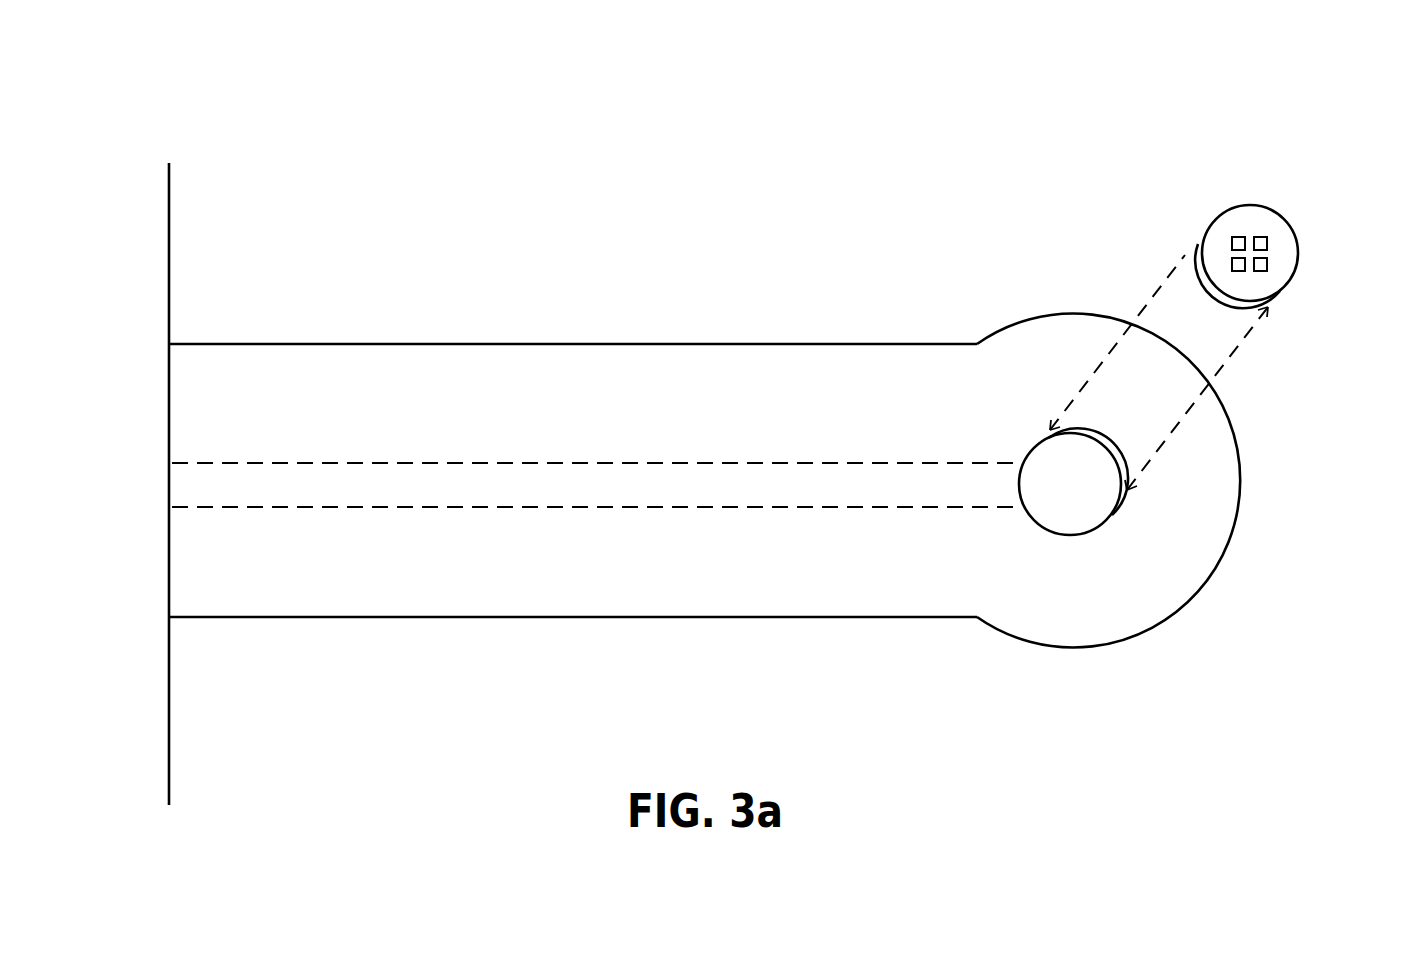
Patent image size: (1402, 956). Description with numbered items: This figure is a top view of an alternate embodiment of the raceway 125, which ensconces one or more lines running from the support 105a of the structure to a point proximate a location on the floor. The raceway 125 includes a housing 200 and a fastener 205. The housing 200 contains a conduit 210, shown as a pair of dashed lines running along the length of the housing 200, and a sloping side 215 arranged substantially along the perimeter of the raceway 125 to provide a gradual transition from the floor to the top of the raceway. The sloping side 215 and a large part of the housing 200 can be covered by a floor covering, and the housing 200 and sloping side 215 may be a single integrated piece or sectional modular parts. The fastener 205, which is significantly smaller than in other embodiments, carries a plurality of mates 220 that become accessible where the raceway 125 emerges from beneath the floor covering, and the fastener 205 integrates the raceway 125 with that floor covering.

The support 105a is at (168, 255).
The raceway 125 is at (566, 151).
The housing 200 is at (718, 490).
The fastener 205 is at (1292, 232).
The conduit 210 is at (580, 502).
The sloping side 215 is at (580, 412).
The mates 220 is at (1260, 258).